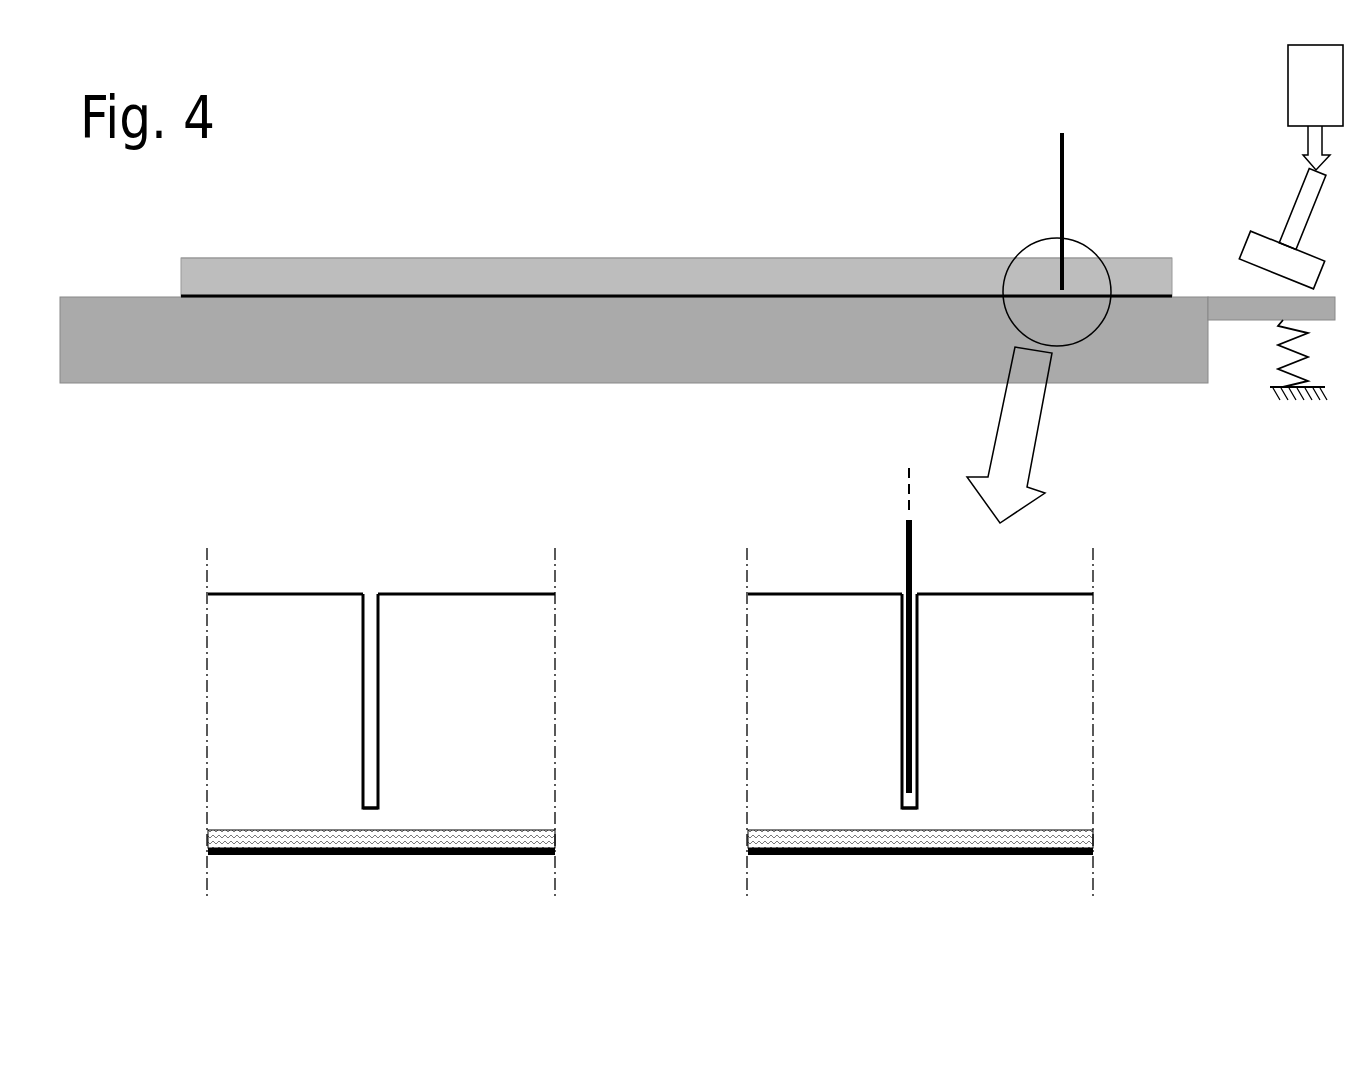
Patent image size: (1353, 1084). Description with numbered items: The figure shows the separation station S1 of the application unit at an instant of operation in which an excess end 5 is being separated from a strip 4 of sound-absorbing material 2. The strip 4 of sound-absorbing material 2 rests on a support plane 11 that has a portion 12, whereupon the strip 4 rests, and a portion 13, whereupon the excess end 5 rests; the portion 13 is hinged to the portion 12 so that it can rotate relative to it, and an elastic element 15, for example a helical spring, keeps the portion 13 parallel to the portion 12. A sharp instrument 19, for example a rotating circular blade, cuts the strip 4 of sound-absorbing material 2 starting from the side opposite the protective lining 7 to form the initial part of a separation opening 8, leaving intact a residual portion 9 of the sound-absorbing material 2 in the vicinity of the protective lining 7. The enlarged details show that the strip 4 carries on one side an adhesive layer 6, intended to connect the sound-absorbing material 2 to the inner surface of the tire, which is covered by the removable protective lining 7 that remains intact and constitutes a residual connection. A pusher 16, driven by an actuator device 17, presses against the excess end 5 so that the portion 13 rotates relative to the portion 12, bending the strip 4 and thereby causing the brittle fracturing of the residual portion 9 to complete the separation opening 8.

The separation station S1 is at (598, 137).
The sound-absorbing material 2 is at (466, 278).
The strip 4 is at (740, 210).
The excess end 5 is at (1130, 230).
The adhesive layer 6 is at (238, 840).
The protective lining 7 is at (518, 857).
The separation opening 8 is at (370, 645).
The residual portion 9 is at (370, 815).
The support plane 11 is at (118, 408).
The portion 12 is at (583, 345).
The portion 13 is at (1226, 303).
The elastic element 15 is at (1262, 365).
The pusher 16 is at (1270, 253).
The actuator device 17 is at (1315, 107).
The sharp instrument 19 is at (1057, 157).